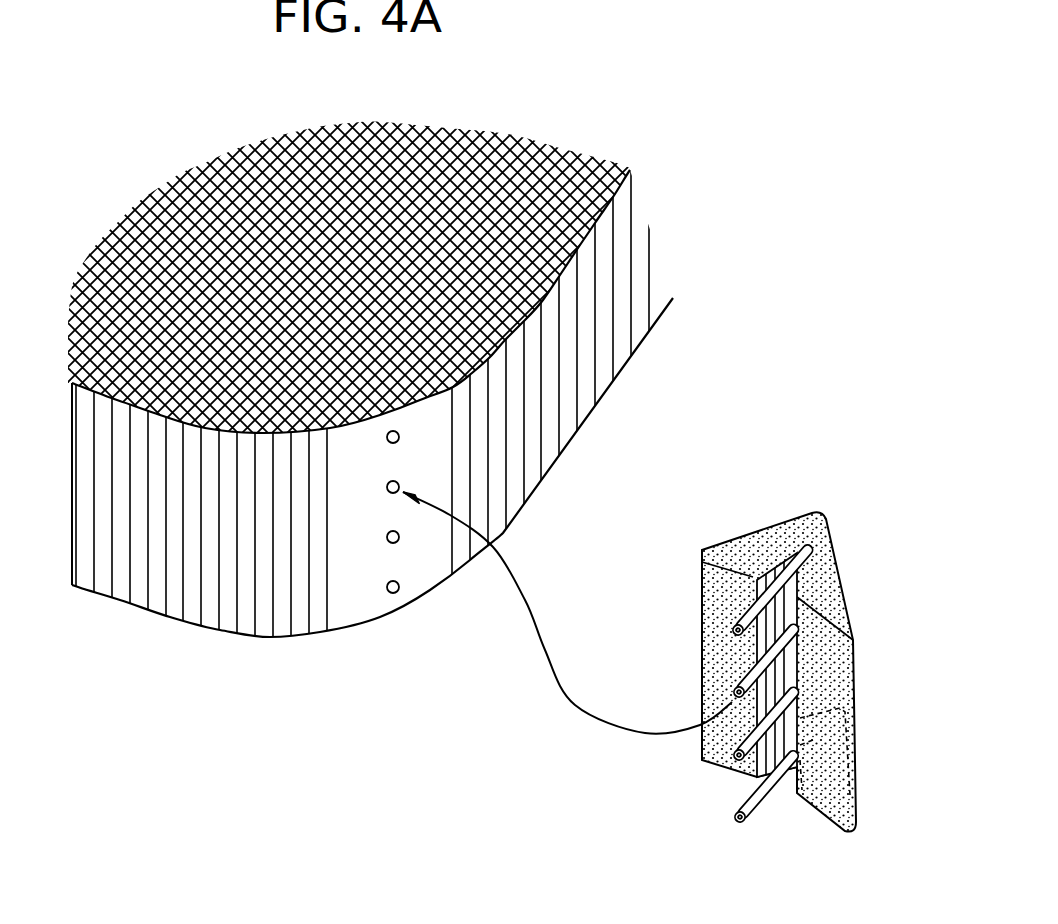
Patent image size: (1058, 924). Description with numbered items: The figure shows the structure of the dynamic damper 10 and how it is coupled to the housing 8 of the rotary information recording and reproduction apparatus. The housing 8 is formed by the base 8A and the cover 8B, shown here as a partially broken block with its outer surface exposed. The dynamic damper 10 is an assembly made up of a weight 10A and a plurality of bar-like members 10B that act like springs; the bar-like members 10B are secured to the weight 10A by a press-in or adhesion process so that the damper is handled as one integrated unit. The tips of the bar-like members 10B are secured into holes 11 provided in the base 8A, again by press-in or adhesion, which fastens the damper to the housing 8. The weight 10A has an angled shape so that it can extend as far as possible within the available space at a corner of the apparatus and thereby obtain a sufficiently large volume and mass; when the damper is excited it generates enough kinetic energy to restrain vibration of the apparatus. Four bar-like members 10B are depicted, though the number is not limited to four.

The housing 8 is at (453, 381).
The base 8A is at (622, 247).
The cover 8B is at (550, 147).
The holes 11 is at (387, 441).
The dynamic damper 10 is at (765, 630).
The weight 10A is at (843, 572).
The bar-like members 10B is at (704, 656).